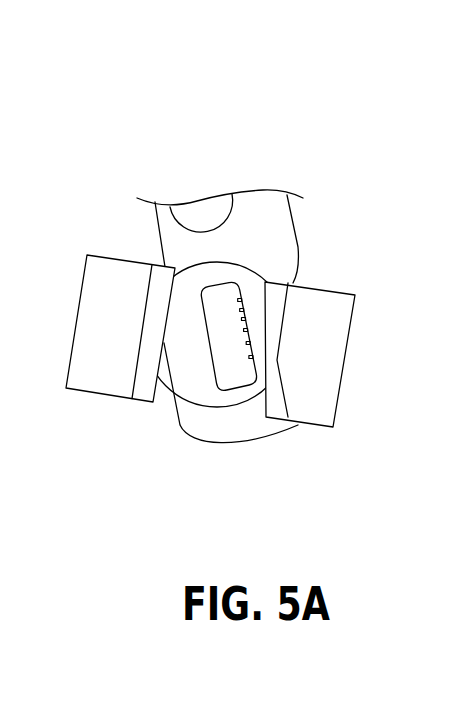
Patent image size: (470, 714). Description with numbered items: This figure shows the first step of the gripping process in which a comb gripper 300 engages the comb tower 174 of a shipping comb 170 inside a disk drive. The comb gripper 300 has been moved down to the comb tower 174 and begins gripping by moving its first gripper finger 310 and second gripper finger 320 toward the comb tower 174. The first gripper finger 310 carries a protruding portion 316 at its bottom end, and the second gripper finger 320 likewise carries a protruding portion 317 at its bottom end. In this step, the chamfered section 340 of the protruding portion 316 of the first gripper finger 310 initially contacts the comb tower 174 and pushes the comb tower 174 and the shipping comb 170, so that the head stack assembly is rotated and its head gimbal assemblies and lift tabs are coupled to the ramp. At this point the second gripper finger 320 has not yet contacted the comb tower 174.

The shipping comb 170 is at (297, 223).
The comb tower 174 is at (223, 323).
The comb gripper 300 is at (240, 343).
The first gripper finger 310 is at (327, 362).
The protruding portion 316 is at (277, 422).
The protruding portion 317 is at (142, 402).
The second gripper finger 320 is at (104, 338).
The chamfered section 340 is at (267, 412).